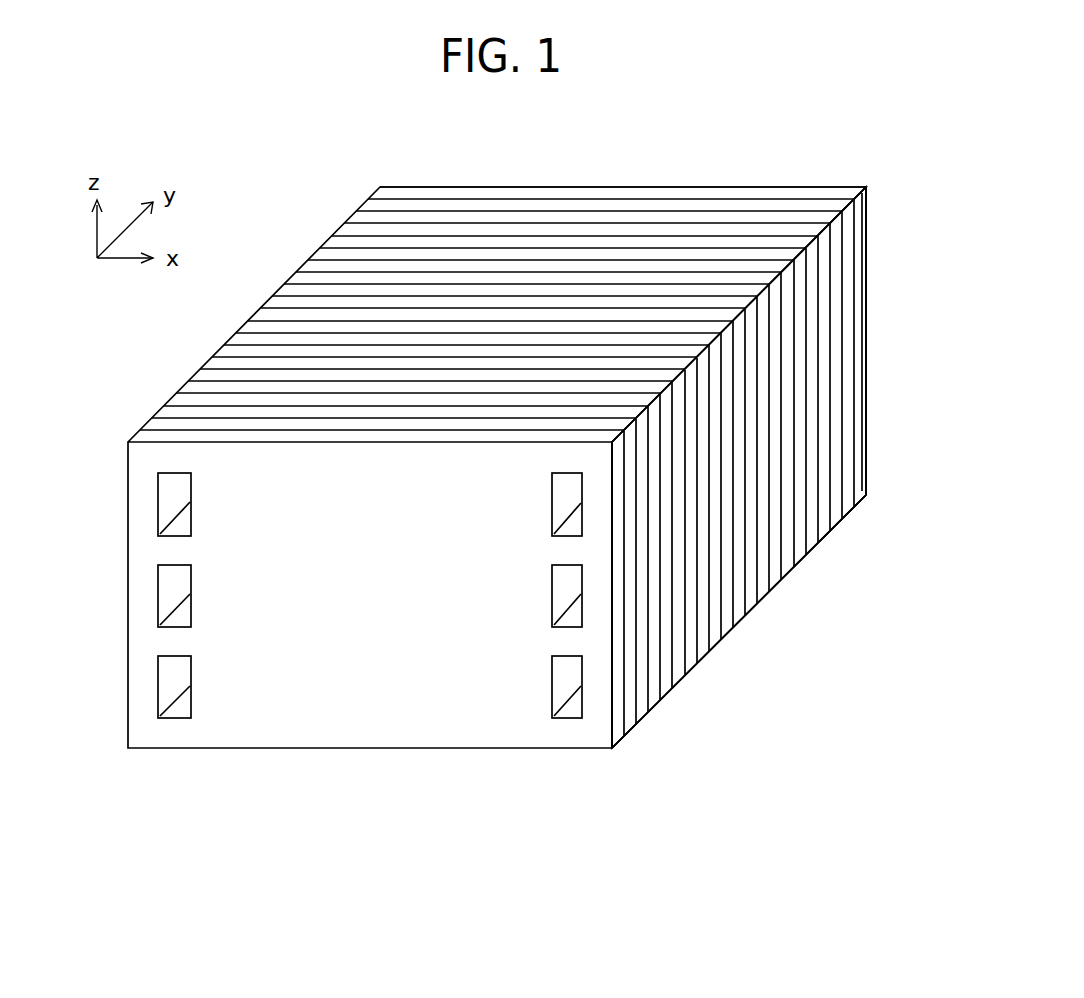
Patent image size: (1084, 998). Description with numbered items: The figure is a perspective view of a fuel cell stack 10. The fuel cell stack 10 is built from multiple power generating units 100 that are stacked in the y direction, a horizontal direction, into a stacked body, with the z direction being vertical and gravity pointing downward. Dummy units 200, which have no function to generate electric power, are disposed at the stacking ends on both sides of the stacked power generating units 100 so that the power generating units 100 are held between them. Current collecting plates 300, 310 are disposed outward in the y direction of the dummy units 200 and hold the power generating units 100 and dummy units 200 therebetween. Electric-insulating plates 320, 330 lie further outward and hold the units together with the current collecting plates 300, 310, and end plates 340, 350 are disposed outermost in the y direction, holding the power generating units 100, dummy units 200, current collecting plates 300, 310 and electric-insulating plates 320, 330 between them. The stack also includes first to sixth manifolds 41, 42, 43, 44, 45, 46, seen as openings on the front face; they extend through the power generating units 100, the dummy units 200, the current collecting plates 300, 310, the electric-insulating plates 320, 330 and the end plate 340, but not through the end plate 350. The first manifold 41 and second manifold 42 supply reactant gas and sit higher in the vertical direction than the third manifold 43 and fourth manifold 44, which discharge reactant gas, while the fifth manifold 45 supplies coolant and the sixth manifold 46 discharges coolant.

The fuel cell stack 10 is at (285, 197).
The power generating unit 100 is at (810, 551).
The dummy unit 200 is at (826, 535).
The current collecting plate 300 is at (652, 709).
The current collecting plate 310 is at (834, 527).
The electric-insulating plate 320 is at (628, 732).
The electric-insulating plate 330 is at (851, 511).
The end plate 340 is at (616, 748).
The end plate 350 is at (864, 496).
The first manifold 41 is at (158, 500).
The second manifold 42 is at (552, 498).
The third manifold 43 is at (552, 683).
The fourth manifold 44 is at (158, 685).
The fifth manifold 45 is at (158, 596).
The sixth manifold 46 is at (552, 596).